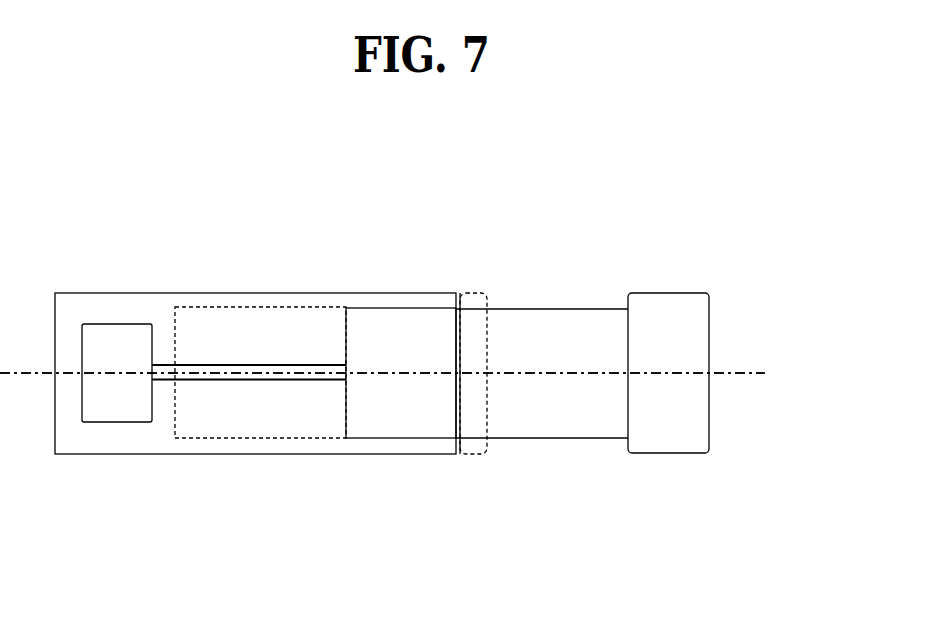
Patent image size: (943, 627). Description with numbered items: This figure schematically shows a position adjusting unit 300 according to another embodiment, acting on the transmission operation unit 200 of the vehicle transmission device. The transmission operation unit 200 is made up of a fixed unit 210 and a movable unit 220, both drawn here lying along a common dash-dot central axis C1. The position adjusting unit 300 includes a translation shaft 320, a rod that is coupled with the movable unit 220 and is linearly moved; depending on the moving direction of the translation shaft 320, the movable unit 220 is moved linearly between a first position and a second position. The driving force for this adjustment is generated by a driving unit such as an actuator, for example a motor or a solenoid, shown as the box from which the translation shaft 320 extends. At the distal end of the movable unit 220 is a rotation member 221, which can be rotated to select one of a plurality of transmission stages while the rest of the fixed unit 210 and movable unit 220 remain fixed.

The transmission operation unit 200 is at (276, 445).
The fixed unit 210 is at (315, 422).
The movable unit 220 is at (522, 422).
The rotation member 221 is at (663, 302).
The position adjusting unit 300 is at (118, 335).
The translation shaft 320 is at (257, 368).
The central axis of the fixed unit C1 is at (424, 373).